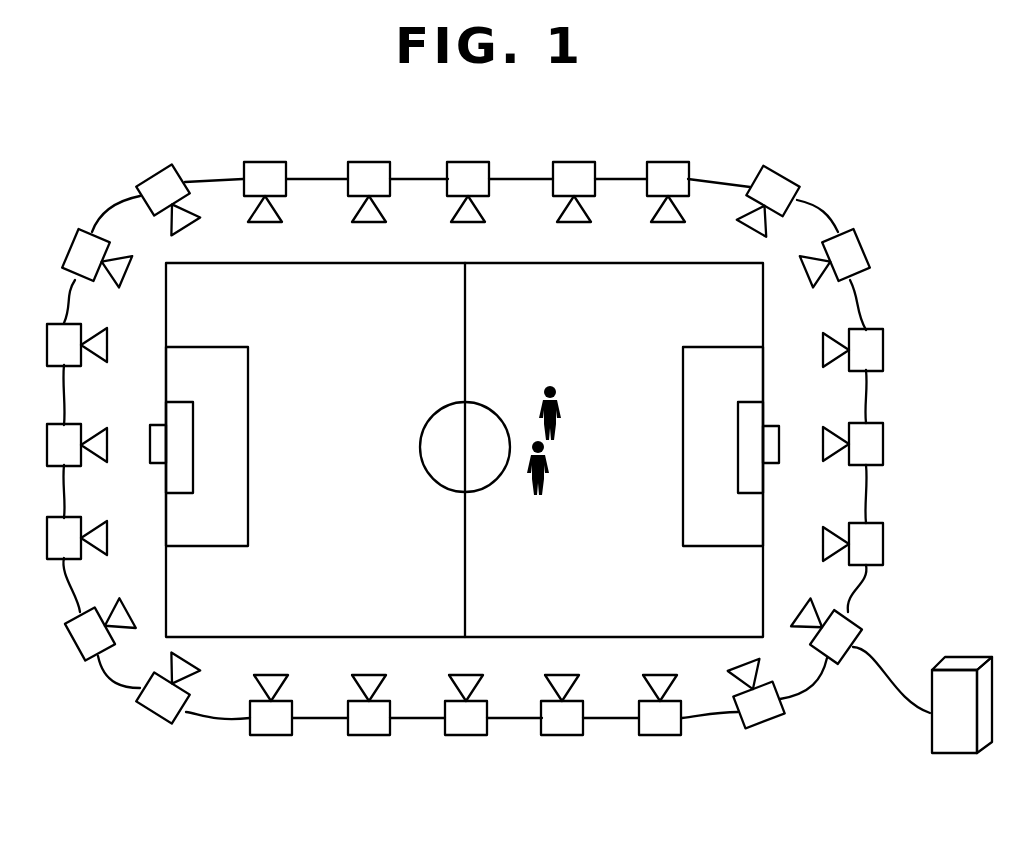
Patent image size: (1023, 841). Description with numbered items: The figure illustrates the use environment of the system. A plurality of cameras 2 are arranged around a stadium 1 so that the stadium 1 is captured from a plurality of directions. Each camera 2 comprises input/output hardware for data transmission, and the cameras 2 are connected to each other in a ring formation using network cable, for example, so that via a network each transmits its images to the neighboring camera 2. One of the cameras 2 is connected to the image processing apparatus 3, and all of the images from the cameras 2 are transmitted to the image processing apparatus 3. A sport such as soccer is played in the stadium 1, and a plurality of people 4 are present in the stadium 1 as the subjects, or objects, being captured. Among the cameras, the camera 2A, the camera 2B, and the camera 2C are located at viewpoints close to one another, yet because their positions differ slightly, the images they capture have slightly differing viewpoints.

The stadium 1 is at (303, 636).
The camera 2 is at (267, 738).
The camera 2A is at (369, 738).
The camera 2B is at (466, 738).
The camera 2C is at (562, 738).
The image processing apparatus 3 is at (960, 667).
The people 4 is at (533, 494).